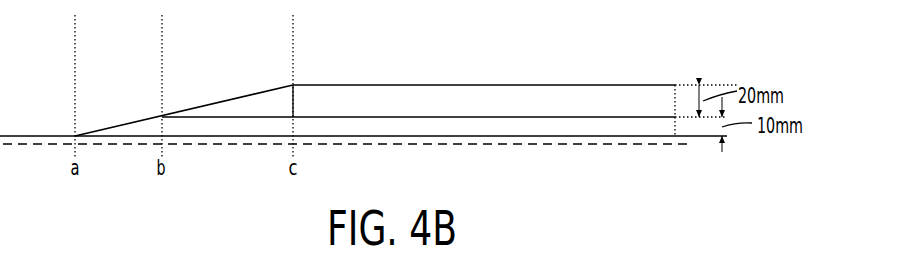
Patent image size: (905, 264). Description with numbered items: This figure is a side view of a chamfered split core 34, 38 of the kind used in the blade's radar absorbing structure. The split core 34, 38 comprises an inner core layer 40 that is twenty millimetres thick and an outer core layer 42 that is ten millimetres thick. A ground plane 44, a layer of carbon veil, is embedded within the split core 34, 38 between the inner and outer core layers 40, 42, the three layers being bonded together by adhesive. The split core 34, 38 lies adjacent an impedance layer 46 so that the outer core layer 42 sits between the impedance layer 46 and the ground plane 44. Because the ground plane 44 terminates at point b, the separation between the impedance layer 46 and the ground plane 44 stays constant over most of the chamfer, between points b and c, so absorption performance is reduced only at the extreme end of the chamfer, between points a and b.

The split core 34 is at (363, 104).
The split core 38 is at (363, 104).
The inner core layer 40 is at (344, 94).
The outer core layer 42 is at (353, 127).
The ground plane 44 is at (218, 116).
The impedance layer 46 is at (230, 146).